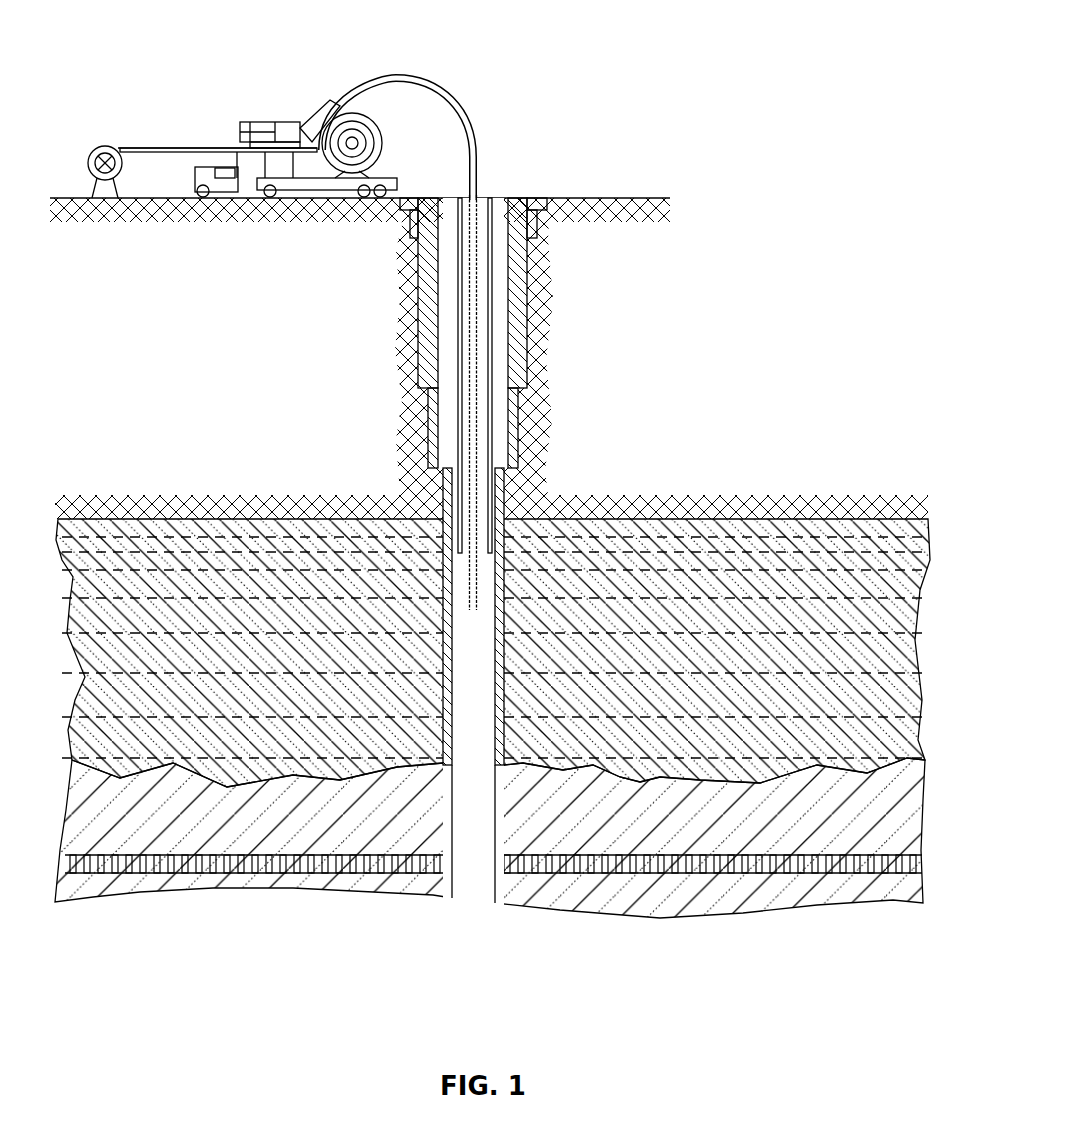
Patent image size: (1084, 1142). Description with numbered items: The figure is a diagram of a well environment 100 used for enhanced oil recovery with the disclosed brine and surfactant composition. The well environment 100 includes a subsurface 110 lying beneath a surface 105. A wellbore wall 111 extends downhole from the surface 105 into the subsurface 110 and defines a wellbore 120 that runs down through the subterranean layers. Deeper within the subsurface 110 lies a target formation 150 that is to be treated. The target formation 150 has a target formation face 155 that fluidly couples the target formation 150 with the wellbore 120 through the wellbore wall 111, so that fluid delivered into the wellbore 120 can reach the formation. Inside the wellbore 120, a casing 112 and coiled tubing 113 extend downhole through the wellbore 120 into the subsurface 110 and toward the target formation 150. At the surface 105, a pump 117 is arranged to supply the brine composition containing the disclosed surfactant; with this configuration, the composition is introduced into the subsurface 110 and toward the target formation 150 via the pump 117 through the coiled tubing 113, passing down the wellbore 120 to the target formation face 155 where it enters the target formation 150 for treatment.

The well environment 100 is at (765, 86).
The surface 105 is at (655, 154).
The subsurface 110 is at (652, 598).
The wellbore wall 111 is at (525, 446).
The casing 112 is at (502, 297).
The coiled tubing 113 is at (350, 108).
The pump 117 is at (85, 160).
The wellbore 120 is at (497, 829).
The target formation 150 is at (938, 863).
The target formation face 155 is at (486, 863).